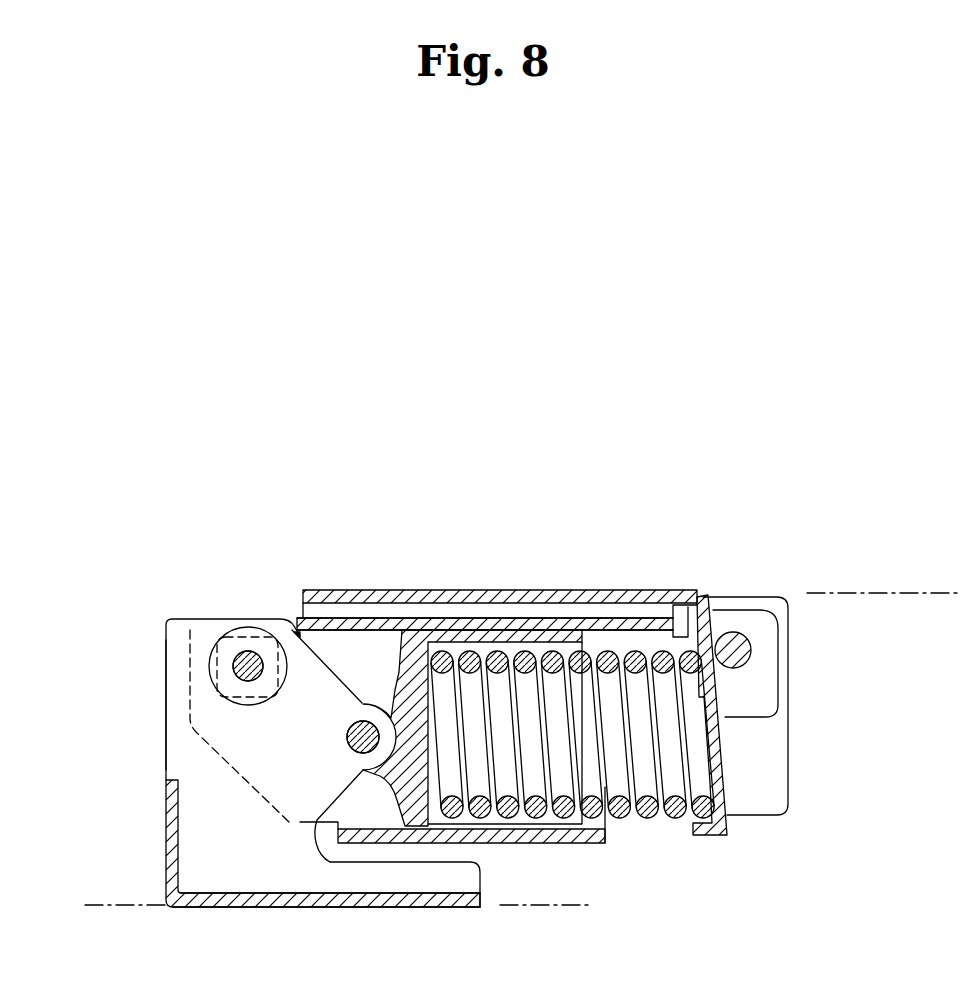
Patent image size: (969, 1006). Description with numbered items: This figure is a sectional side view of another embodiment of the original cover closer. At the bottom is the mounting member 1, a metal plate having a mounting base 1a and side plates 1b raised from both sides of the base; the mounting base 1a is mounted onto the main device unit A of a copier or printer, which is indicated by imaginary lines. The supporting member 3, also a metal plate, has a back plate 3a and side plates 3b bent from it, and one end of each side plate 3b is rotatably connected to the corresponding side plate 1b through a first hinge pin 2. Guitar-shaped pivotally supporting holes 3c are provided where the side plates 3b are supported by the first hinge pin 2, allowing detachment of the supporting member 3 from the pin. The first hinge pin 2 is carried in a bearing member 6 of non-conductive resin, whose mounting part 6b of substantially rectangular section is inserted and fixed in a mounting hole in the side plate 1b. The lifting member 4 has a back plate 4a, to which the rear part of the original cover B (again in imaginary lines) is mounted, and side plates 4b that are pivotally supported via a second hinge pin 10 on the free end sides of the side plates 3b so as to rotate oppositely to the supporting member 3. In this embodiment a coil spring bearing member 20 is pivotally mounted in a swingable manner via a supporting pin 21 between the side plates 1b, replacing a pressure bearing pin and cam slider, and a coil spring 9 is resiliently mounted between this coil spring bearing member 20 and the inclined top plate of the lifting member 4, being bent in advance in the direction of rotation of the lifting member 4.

The mounting member 1 is at (158, 777).
The mounting base 1a is at (338, 890).
The side plates 1b is at (175, 717).
The first hinge pin 2 is at (238, 630).
The supporting member 3 is at (460, 612).
The back plate 3a is at (387, 617).
The side plates 3b is at (653, 637).
The pivotally supporting holes 3c is at (723, 788).
The lifting member 4 is at (592, 576).
The back plate 4a is at (528, 596).
The side plates 4b is at (775, 740).
The bearing member 6 is at (257, 633).
The mounting part 6b is at (217, 650).
The coil spring 9 is at (622, 815).
The second hinge pin 10 is at (733, 652).
The coil spring bearing member 20 is at (395, 680).
The supporting pin 21 is at (347, 742).
The main device unit A is at (567, 905).
The original cover B is at (860, 593).